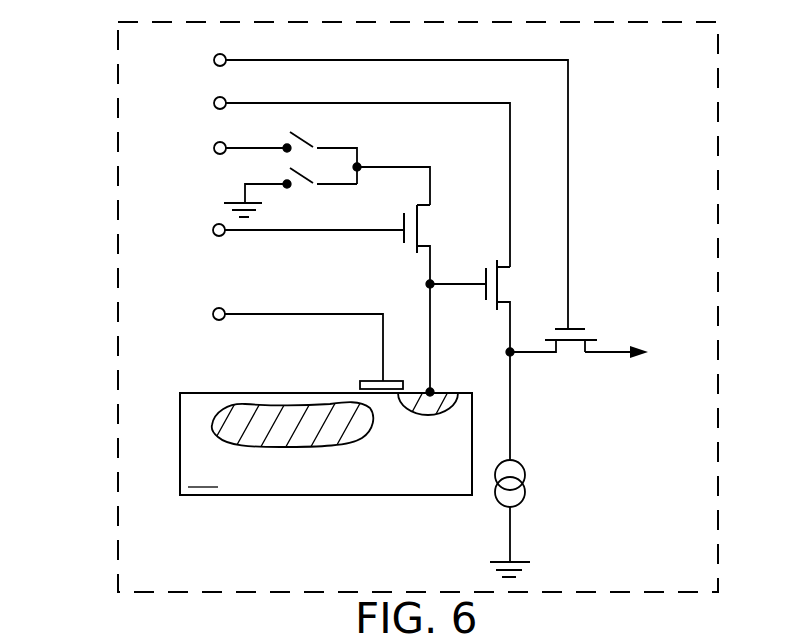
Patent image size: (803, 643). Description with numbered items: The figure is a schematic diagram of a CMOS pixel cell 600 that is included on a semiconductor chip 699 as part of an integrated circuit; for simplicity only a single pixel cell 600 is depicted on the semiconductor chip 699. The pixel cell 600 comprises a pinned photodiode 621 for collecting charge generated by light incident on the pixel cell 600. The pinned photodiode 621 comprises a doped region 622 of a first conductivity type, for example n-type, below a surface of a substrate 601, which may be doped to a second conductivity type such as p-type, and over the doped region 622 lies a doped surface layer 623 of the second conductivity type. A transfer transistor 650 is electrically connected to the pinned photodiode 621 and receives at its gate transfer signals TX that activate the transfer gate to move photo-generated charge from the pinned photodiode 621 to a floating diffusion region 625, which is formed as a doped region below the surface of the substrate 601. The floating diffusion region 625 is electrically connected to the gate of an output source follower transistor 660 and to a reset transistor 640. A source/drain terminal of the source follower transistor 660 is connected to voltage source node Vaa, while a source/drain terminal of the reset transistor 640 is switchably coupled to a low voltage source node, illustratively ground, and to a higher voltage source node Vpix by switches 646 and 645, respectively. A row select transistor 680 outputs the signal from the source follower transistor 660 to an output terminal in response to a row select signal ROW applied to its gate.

The CMOS pixel cell 600 is at (618, 80).
The semiconductor chip 699 is at (118, 79).
The substrate 601 is at (204, 477).
The pinned photodiode 621 is at (200, 373).
The doped region 622 is at (303, 438).
The doped surface layer 623 is at (285, 400).
The floating diffusion region 625 is at (435, 412).
The reset transistor 640 is at (393, 250).
The switch 645 is at (338, 140).
The switch 646 is at (310, 196).
The transfer transistor 650 is at (364, 368).
The output source follower transistor 660 is at (479, 256).
The row select transistor 680 is at (594, 317).